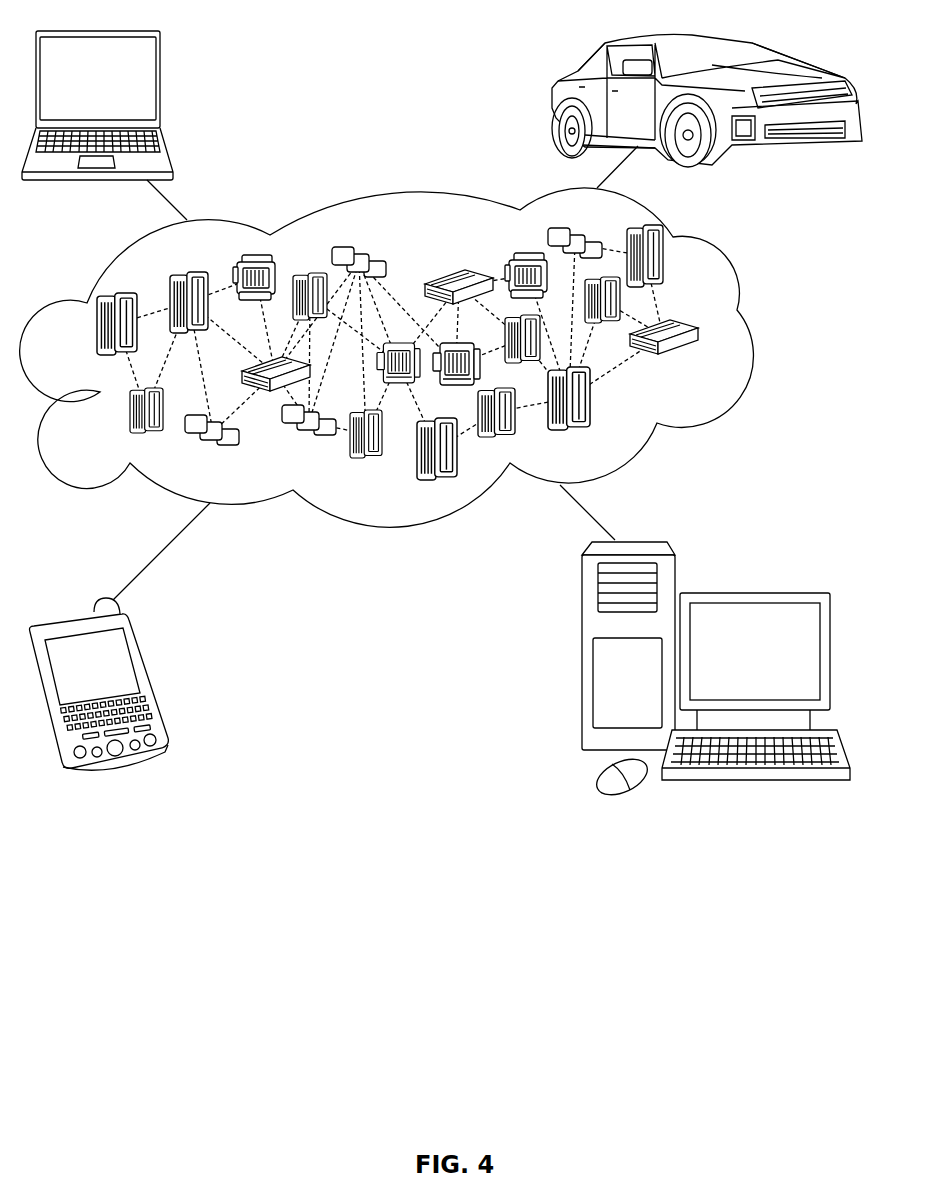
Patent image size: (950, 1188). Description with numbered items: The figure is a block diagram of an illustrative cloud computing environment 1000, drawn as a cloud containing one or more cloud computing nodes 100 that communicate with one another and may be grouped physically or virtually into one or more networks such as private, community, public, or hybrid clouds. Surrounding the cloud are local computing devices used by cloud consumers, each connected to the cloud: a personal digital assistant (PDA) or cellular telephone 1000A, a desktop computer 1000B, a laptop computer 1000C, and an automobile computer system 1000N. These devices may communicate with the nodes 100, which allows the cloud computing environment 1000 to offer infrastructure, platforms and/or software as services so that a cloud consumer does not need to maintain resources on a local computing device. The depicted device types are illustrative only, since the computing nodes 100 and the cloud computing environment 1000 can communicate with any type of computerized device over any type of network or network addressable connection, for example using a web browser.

The laptop computer 1000C is at (162, 88).
The automobile computer system 1000N is at (555, 100).
The cloud computing environment 1000 is at (750, 333).
The cloud computing nodes 100 is at (704, 361).
The personal digital assistant (PDA) or cellular telephone 1000A is at (150, 680).
The desktop computer 1000B is at (752, 592).